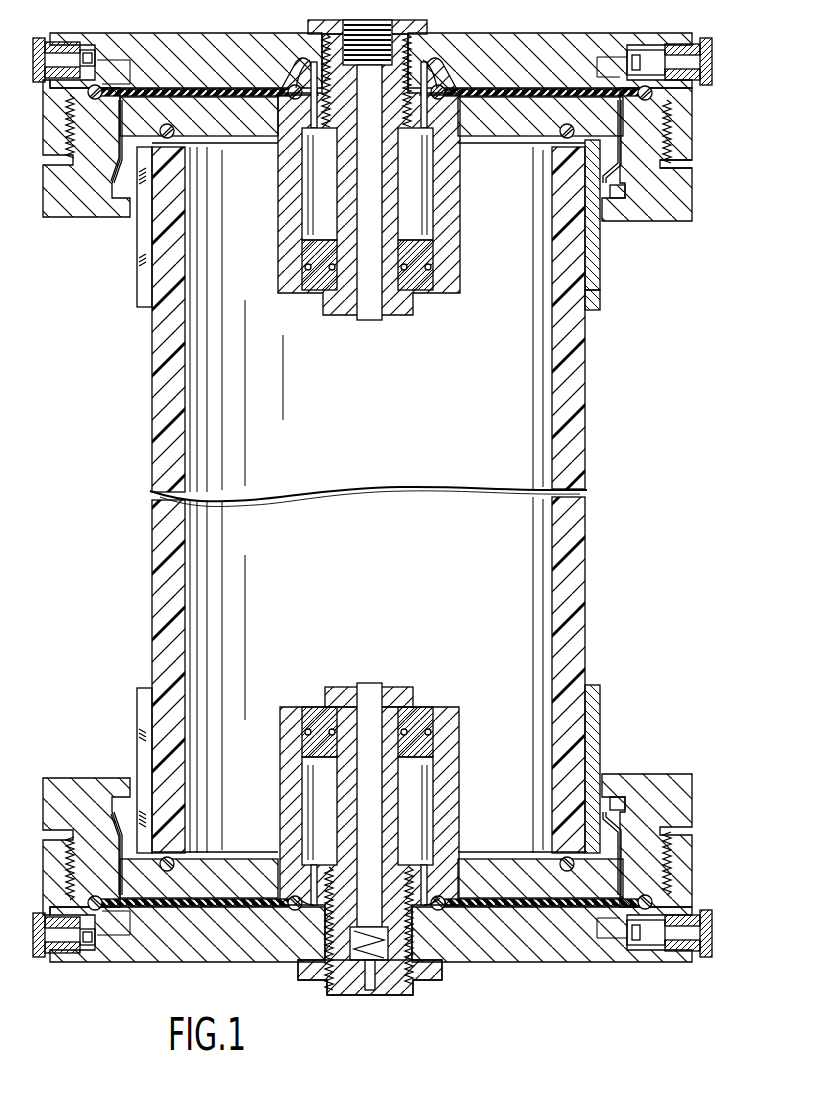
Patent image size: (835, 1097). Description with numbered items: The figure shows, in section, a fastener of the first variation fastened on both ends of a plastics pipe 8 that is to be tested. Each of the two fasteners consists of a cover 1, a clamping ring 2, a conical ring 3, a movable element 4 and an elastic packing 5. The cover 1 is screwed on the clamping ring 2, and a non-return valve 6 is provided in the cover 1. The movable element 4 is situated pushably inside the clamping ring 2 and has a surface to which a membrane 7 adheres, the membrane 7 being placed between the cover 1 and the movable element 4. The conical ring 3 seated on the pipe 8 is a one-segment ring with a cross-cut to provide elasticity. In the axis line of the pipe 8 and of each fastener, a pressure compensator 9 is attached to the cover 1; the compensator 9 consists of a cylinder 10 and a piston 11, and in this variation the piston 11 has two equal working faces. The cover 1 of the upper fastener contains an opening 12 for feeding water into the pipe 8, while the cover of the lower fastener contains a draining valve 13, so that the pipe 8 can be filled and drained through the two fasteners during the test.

The cover 1 is at (680, 105).
The clamping ring 2 is at (87, 208).
The conical ring 3 is at (600, 227).
The movable element 4 is at (690, 203).
The elastic packing 5 is at (613, 193).
The non-return valve 6 is at (706, 72).
The membrane 7 is at (676, 165).
The plastics pipe 8 is at (576, 526).
The pressure compensator 9 is at (417, 217).
The cylinder 10 is at (600, 293).
The piston 11 is at (452, 196).
The opening 12 is at (668, 40).
The draining valve 13 is at (413, 988).